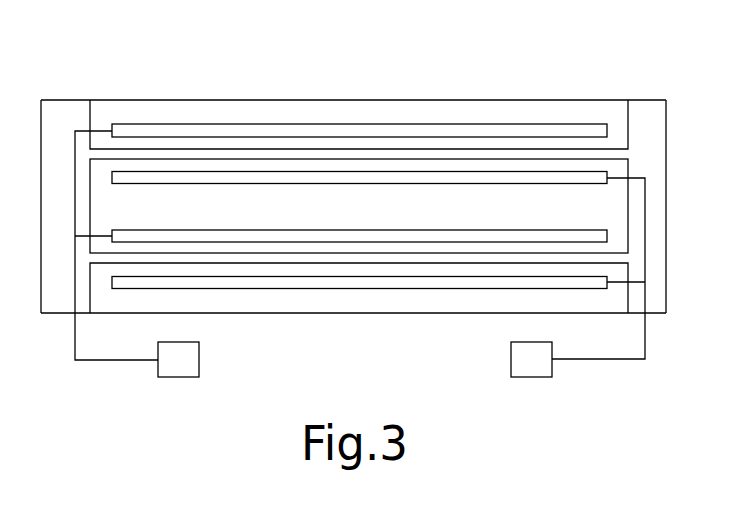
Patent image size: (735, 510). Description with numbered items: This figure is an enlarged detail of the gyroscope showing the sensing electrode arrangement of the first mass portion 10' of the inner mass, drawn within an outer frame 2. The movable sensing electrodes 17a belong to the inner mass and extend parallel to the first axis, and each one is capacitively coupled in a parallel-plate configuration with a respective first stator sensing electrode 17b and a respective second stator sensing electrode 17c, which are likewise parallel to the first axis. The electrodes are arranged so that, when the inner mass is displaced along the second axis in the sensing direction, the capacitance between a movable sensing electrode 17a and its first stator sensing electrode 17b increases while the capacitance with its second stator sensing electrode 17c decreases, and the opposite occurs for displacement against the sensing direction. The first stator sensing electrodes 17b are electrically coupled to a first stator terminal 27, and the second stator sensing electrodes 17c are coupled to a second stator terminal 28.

The sensor element 2 is at (413, 115).
The first mass portion 10' is at (349, 183).
The movable sensing electrode 17a is at (330, 154).
The first stator sensing electrode 17b is at (250, 131).
The second stator sensing electrode 17c is at (558, 180).
The first stator terminal 27 is at (163, 377).
The second stator terminal 28 is at (542, 370).